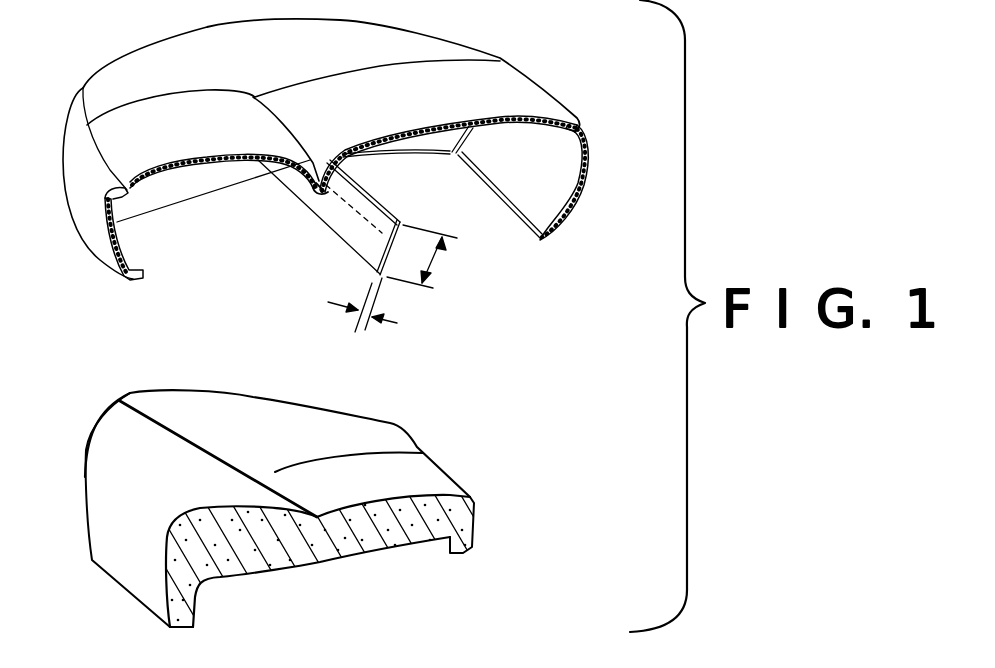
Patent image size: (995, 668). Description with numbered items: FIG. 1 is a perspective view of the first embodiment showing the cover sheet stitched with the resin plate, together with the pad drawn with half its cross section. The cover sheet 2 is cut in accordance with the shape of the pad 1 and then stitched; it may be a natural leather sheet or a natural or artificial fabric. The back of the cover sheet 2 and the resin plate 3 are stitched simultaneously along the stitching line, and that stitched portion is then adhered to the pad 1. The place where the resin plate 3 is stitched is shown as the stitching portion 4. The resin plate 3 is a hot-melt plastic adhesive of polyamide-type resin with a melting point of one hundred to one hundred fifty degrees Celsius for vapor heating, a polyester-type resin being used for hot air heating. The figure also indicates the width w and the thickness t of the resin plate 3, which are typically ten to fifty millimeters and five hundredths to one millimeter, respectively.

The pad 1 is at (110, 480).
The cover sheet 2 is at (145, 72).
The resin plate 3 is at (355, 230).
The stitching portion of the plate 4 is at (308, 183).
The width of the resin plate w is at (428, 258).
The thickness of the resin plate t is at (362, 324).